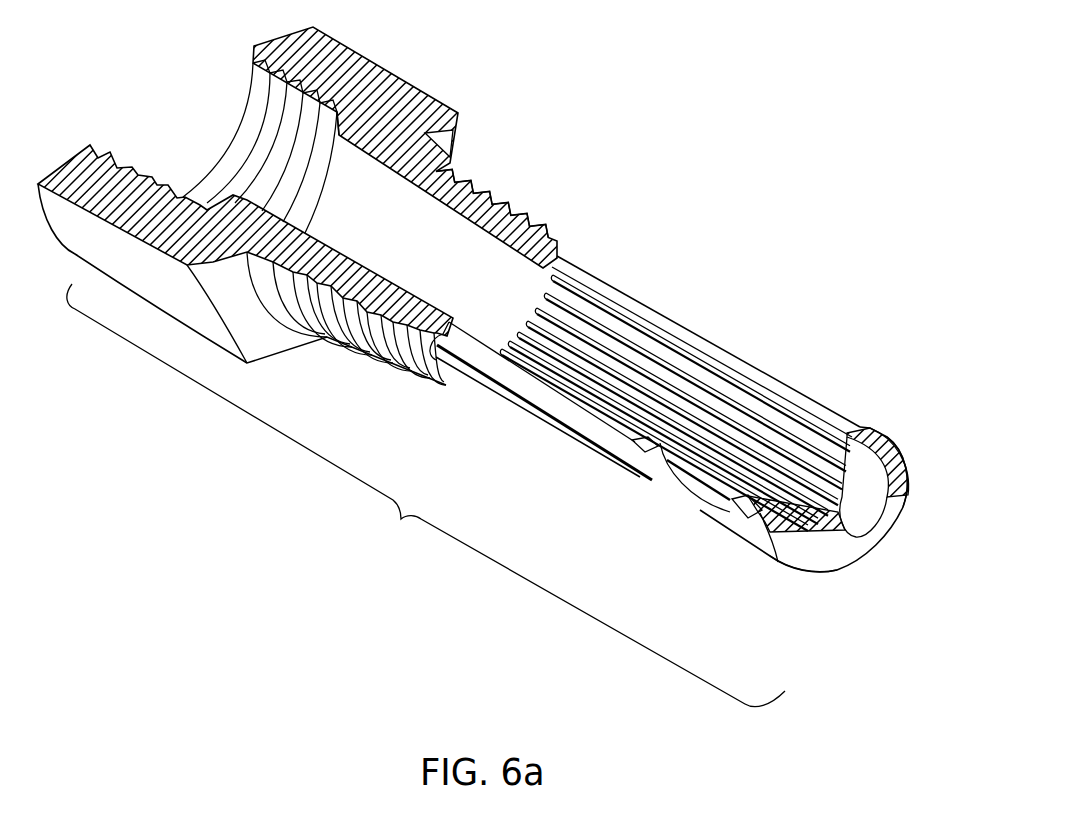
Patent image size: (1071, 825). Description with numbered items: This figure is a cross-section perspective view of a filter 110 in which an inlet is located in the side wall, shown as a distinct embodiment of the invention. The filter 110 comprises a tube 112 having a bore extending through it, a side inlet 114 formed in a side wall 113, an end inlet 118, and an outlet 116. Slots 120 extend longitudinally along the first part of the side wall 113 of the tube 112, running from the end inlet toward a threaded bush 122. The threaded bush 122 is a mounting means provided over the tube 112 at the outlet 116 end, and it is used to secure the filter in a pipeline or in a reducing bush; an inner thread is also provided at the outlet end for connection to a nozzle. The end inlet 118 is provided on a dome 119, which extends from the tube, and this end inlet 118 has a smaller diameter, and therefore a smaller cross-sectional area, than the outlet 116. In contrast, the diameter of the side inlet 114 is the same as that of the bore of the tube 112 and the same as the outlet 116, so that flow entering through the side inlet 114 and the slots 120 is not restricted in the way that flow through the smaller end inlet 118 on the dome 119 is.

The filter 110 is at (718, 100).
The tube 112 is at (401, 519).
The side wall 113 is at (573, 443).
The side inlet 114 is at (703, 522).
The outlet 116 is at (228, 137).
The end inlet 118 is at (887, 537).
The dome 119 is at (810, 574).
The slots 120 is at (713, 393).
The threaded bush 122 is at (500, 190).